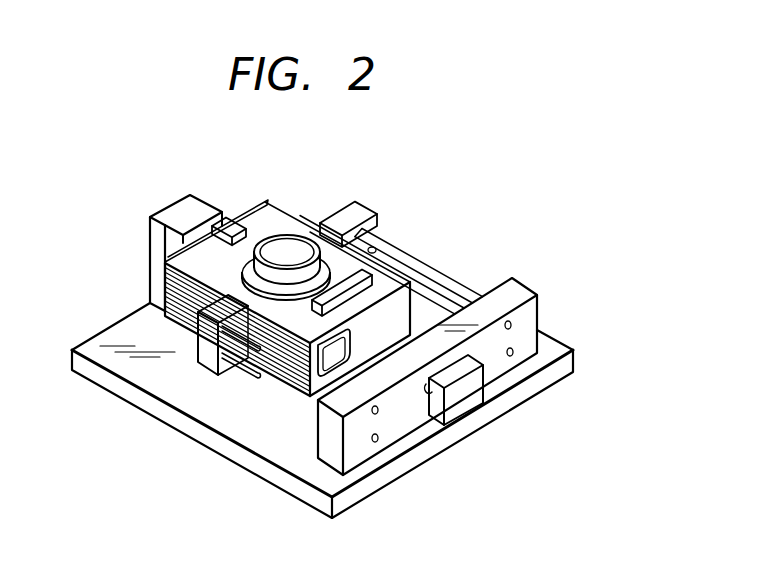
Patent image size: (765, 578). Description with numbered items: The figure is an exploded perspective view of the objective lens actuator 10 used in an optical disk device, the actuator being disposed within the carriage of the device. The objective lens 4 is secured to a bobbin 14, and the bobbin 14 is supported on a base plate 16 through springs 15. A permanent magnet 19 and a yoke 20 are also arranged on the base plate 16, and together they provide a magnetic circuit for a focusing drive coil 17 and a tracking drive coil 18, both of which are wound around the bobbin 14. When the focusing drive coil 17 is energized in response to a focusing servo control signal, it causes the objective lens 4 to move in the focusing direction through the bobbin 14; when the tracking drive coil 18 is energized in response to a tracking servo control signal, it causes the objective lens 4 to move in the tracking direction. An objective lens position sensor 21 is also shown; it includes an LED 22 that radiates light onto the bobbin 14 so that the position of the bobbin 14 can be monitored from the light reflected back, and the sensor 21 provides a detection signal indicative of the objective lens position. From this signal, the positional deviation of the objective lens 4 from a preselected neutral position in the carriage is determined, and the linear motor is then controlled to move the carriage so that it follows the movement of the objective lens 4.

The objective lens actuator 10 is at (560, 243).
The objective lens 4 is at (286, 248).
The bobbin 14 is at (380, 250).
The springs 15 is at (248, 372).
The base plate 16 is at (282, 450).
The focusing drive coil 17 is at (165, 288).
The tracking drive coil 18 is at (334, 345).
The permanent magnet 19 is at (219, 210).
The yoke 20 is at (240, 228).
The objective lens position sensor 21 is at (462, 405).
The LED 22 is at (426, 395).